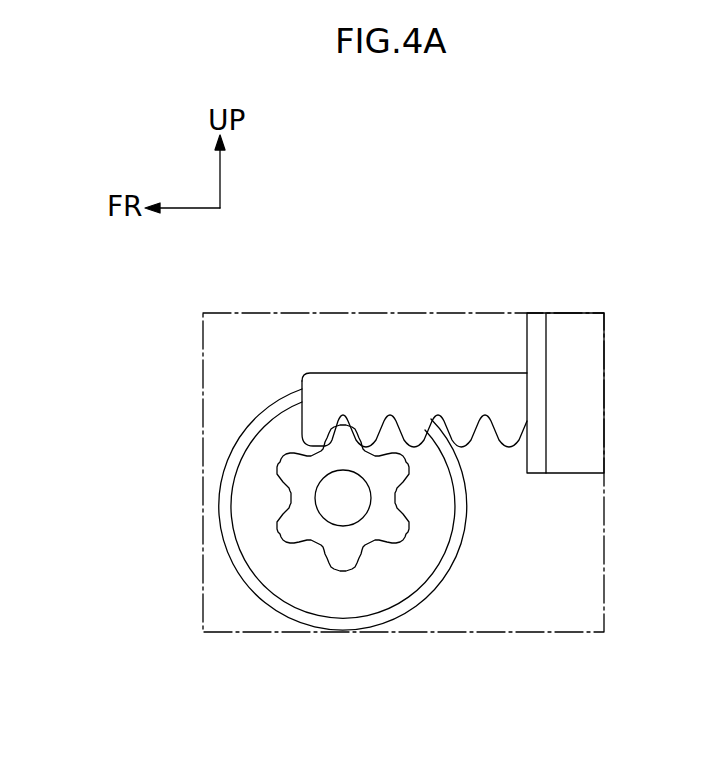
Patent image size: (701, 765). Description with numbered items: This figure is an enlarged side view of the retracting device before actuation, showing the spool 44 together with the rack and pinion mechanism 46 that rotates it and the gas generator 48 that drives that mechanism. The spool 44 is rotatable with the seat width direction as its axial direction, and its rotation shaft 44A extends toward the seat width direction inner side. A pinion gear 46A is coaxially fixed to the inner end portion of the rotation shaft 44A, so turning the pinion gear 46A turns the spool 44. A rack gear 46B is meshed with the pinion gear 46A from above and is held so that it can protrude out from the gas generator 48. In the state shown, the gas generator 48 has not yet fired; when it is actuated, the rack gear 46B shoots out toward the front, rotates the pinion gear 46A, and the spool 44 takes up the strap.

The spool 44 is at (263, 600).
The rotation shaft 44A is at (343, 507).
The rack and pinion mechanism 46 is at (377, 340).
The pinion gear 46A is at (408, 537).
The rack gear 46B is at (392, 373).
The gas generator 48 is at (580, 460).